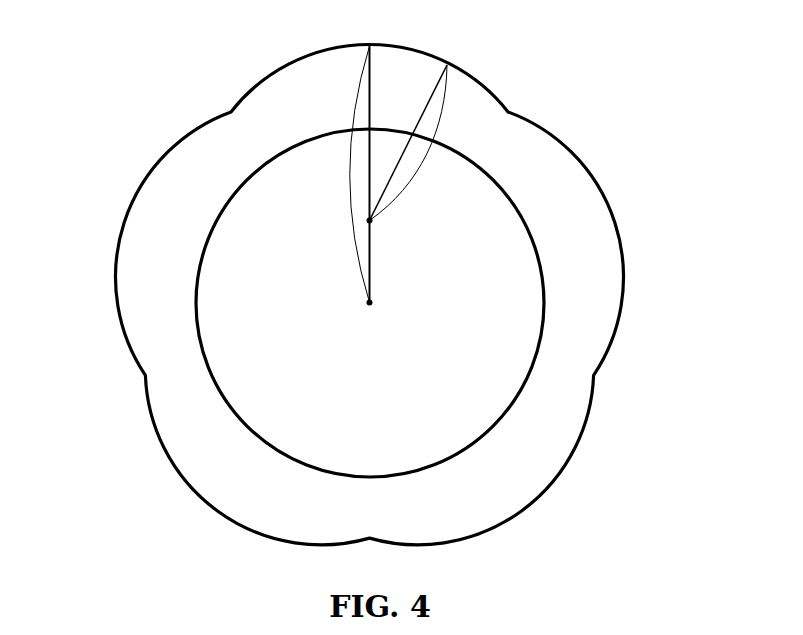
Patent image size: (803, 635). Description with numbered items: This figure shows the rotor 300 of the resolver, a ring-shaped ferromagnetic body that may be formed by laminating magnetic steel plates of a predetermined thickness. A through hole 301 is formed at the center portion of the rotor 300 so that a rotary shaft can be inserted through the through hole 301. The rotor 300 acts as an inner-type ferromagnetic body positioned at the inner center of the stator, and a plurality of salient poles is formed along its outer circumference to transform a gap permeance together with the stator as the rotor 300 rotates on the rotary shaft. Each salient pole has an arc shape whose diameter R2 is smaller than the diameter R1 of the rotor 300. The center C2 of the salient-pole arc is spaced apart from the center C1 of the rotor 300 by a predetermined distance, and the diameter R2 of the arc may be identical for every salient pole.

The rotor 300 is at (565, 147).
The through hole 301 is at (533, 235).
The diameter of the rotor R1 is at (353, 174).
The diameter of the arc of the salient pole R2 is at (409, 143).
The center of the rotor C1 is at (386, 304).
The center of the arc of the salient pole C2 is at (386, 231).